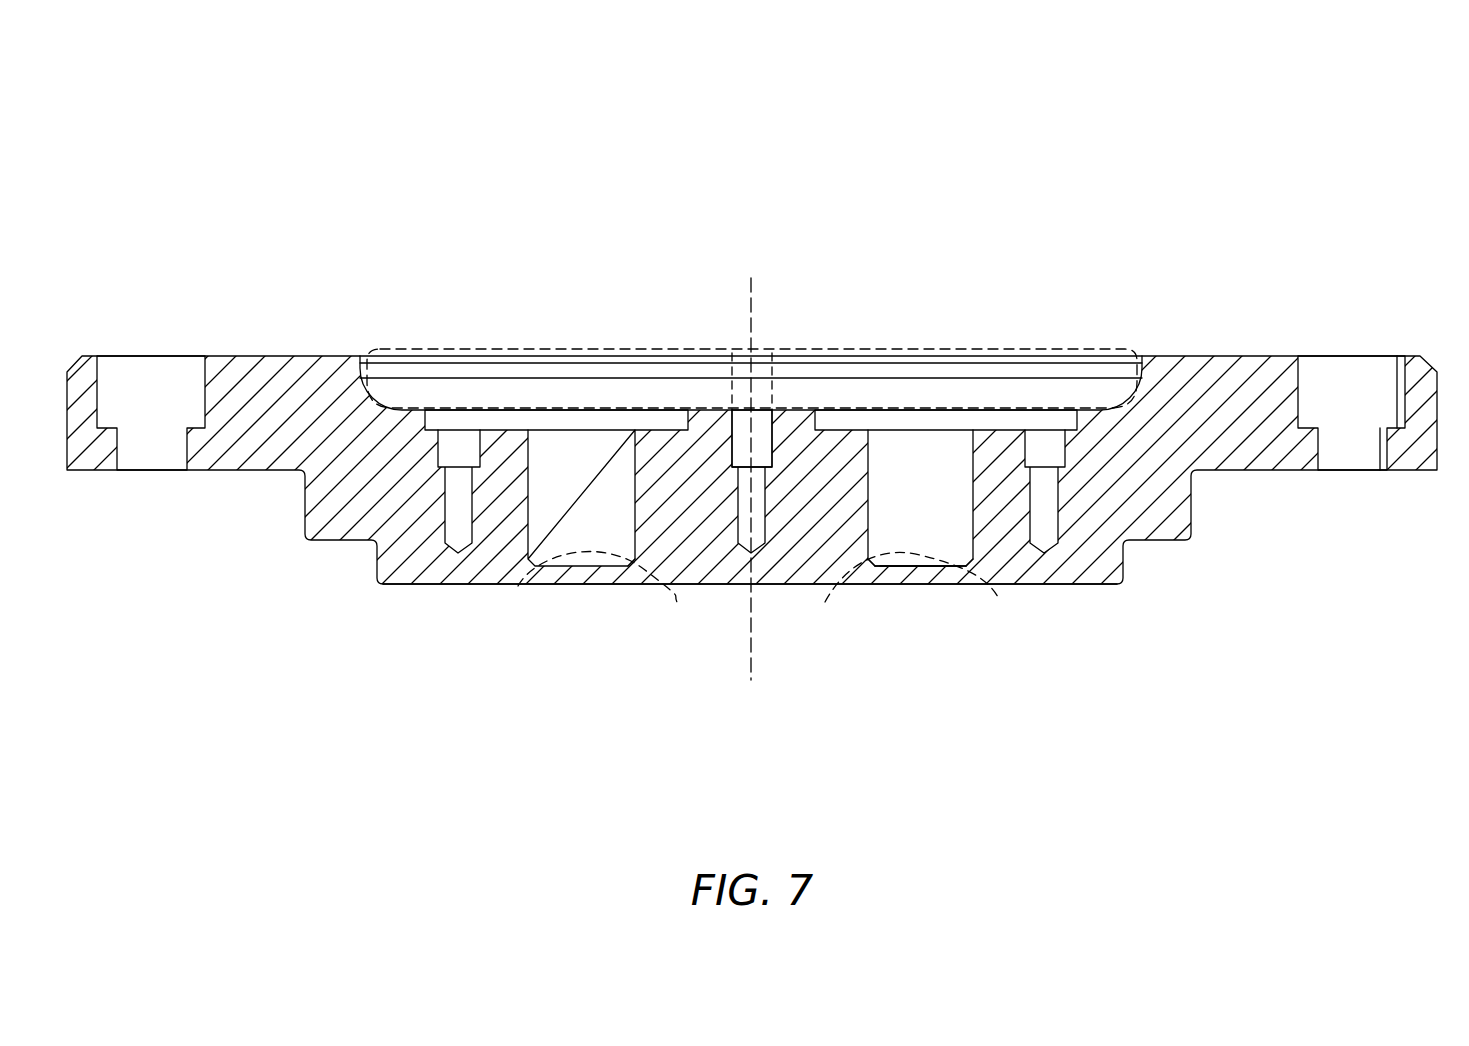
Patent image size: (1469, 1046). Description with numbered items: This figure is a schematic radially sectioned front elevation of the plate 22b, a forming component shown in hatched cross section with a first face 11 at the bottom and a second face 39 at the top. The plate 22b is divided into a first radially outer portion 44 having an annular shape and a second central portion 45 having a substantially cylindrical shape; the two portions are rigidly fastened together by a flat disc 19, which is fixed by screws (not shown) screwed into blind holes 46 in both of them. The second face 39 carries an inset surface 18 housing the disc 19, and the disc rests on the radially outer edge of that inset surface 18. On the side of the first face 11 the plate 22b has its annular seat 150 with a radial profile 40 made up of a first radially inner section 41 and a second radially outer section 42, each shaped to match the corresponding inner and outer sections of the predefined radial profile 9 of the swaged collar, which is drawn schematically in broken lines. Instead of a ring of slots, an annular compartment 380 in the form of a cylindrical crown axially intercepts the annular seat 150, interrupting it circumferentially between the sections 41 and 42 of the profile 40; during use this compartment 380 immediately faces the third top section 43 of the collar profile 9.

The plate 22b is at (1256, 180).
The second face 39 is at (1248, 352).
The first radially outer portion 44 is at (1250, 443).
The inset surface 18 is at (399, 405).
The flat disc 19 is at (660, 385).
The annular compartment 380 is at (631, 487).
The blind holes 46 is at (750, 430).
The second central portion 45 is at (793, 448).
The third top section 43 is at (943, 550).
The first predefined radial profile 9 is at (507, 595).
The radial profile 40 is at (650, 567).
The first radially inner section 41 is at (854, 569).
The annular seat 150 is at (922, 572).
The second radially outer section 42 is at (988, 567).
The first face 11 is at (1104, 591).